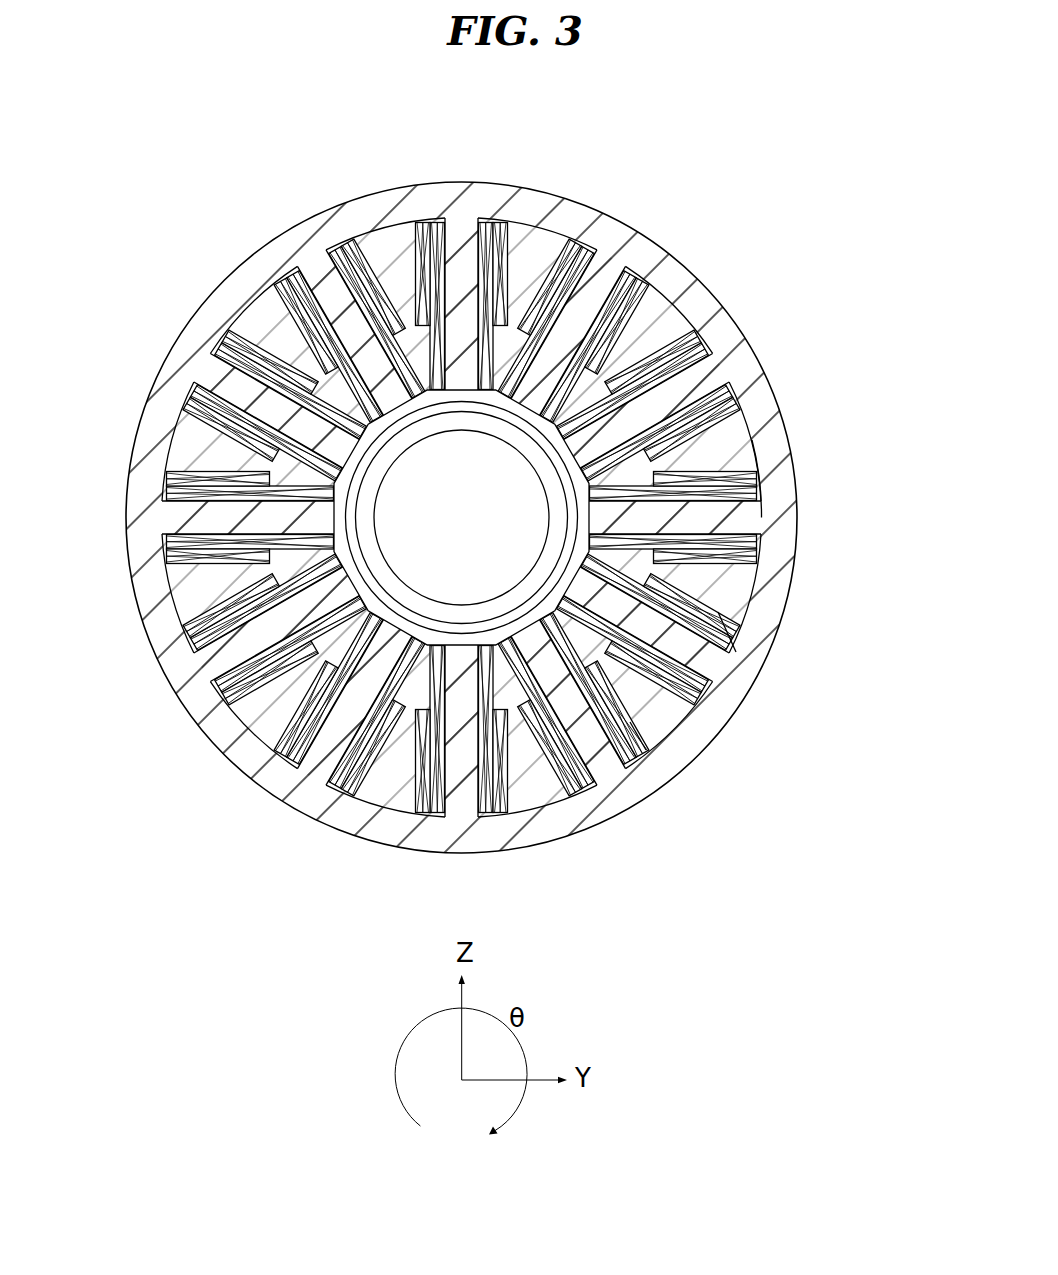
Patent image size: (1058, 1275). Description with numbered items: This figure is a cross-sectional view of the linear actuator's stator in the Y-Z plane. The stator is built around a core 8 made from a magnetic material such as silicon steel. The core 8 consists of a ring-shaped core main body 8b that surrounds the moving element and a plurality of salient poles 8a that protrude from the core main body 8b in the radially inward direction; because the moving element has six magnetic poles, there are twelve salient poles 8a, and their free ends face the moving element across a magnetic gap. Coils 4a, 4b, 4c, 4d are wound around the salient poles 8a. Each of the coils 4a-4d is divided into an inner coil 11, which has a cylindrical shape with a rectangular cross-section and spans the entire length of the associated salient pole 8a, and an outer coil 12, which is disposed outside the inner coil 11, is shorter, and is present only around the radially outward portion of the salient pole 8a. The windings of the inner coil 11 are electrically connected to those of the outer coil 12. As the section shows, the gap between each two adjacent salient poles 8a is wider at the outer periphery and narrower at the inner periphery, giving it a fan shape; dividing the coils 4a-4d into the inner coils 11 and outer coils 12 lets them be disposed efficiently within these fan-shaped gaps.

The core 8 is at (462, 455).
The salient poles 8a is at (633, 413).
The core main body 8b is at (678, 292).
The inner coil 11 is at (755, 363).
The outer coil 12 is at (750, 424).
The coil 4a is at (513, 517).
The coil 4b is at (755, 477).
The coil 4c is at (720, 610).
The coil 4d is at (633, 721).